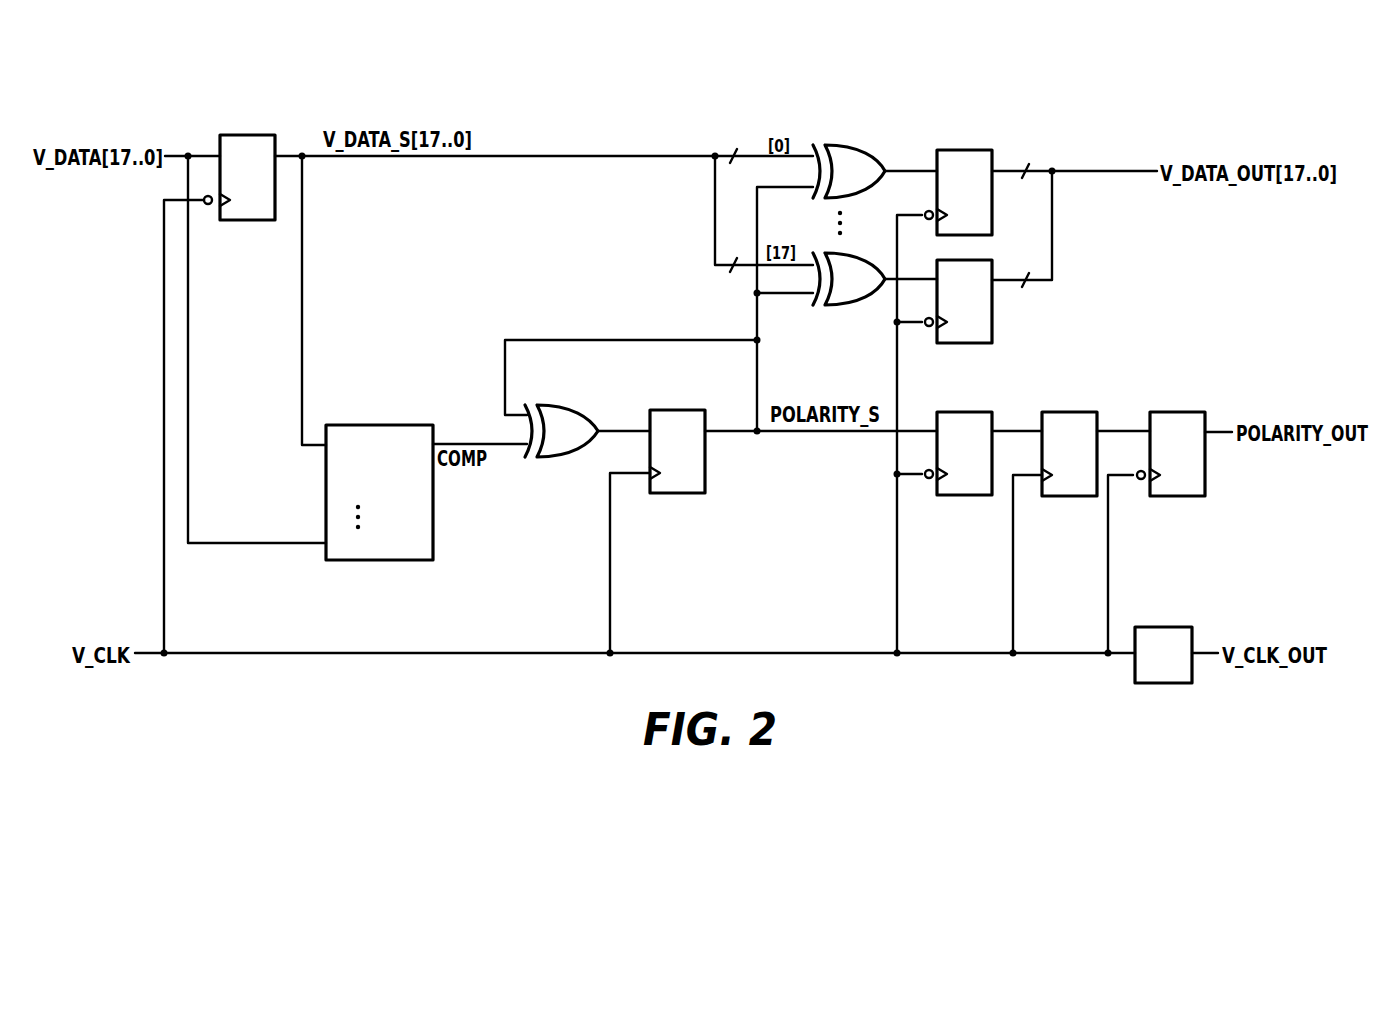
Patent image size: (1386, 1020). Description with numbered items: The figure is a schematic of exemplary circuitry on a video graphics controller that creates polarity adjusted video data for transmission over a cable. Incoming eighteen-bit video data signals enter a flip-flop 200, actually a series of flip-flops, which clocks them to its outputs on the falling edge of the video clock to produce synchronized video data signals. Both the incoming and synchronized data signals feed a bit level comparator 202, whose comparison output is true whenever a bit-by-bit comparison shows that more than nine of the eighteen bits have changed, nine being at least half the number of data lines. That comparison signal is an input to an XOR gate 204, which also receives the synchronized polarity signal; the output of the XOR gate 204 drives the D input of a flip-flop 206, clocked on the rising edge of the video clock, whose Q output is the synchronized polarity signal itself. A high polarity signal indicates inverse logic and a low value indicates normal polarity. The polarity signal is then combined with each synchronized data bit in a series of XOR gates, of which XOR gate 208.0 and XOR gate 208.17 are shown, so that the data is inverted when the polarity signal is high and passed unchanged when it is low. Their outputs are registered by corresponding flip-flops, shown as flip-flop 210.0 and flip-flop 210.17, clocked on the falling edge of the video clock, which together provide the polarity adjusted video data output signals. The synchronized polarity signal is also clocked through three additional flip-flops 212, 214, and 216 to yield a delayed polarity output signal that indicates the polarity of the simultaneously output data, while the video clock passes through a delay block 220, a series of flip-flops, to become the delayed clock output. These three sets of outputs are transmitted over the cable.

The flip-flop 200 is at (255, 135).
The bit level comparator 202 is at (413, 425).
The XOR gate 204 is at (553, 405).
The flip-flop 206 is at (685, 410).
The XOR gate 208.0 is at (840, 145).
The XOR gate 208.17 is at (847, 305).
The flip-flop 210.0 is at (970, 150).
The flip-flop 210.17 is at (970, 343).
The flip-flop 212 is at (962, 495).
The flip-flop 214 is at (1075, 412).
The flip-flop 216 is at (1183, 412).
The delay block 220 is at (1170, 627).